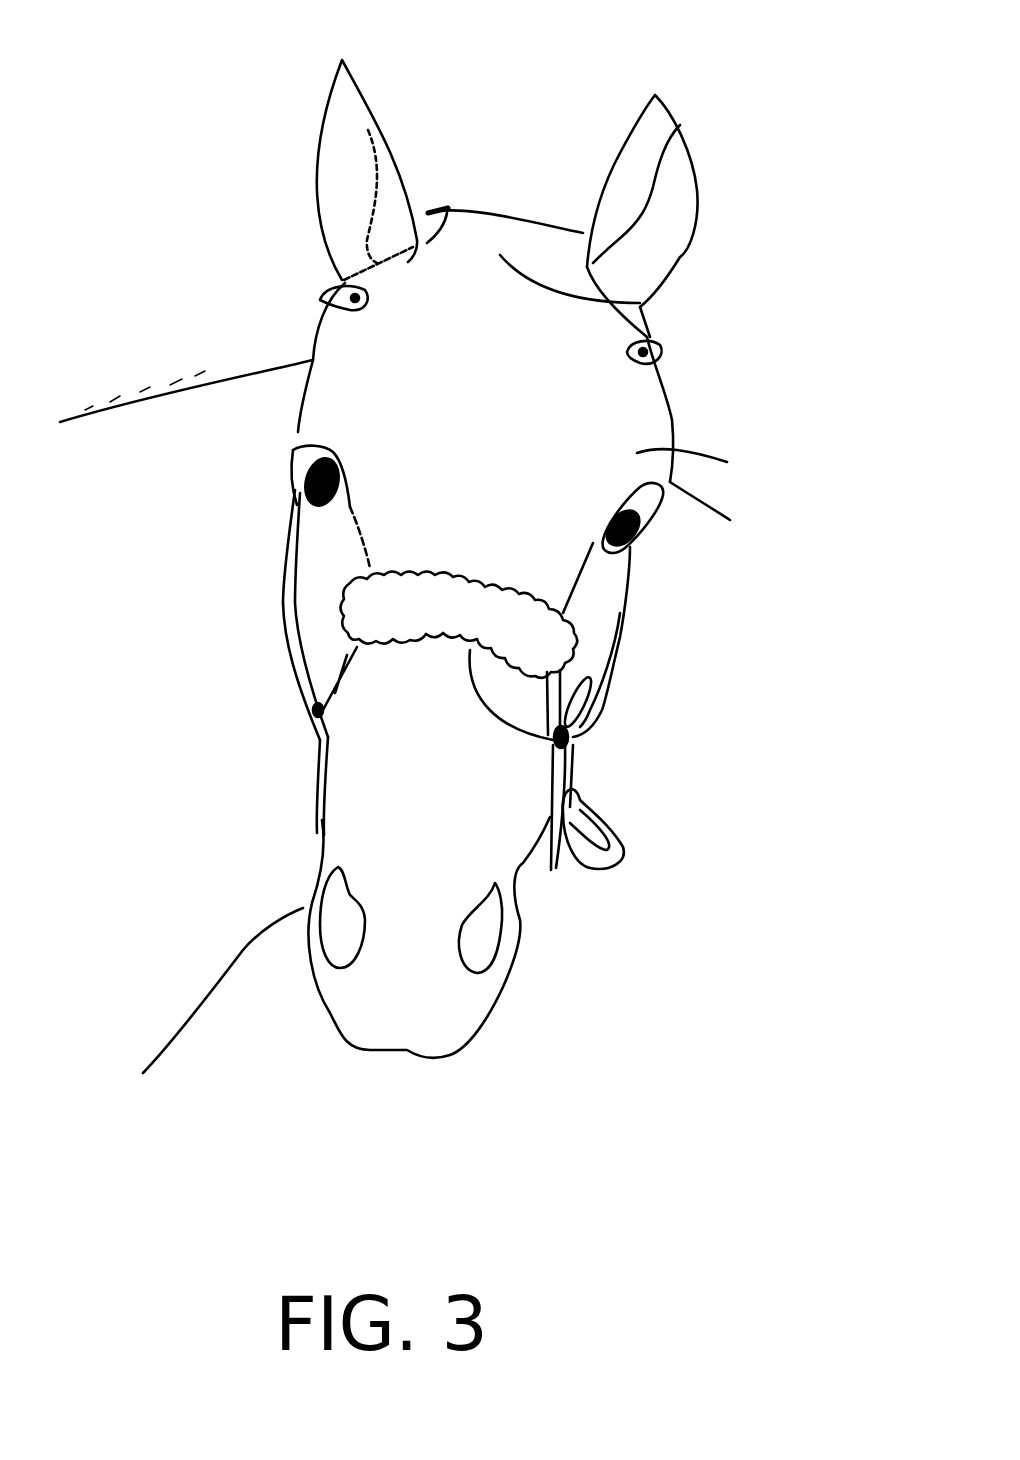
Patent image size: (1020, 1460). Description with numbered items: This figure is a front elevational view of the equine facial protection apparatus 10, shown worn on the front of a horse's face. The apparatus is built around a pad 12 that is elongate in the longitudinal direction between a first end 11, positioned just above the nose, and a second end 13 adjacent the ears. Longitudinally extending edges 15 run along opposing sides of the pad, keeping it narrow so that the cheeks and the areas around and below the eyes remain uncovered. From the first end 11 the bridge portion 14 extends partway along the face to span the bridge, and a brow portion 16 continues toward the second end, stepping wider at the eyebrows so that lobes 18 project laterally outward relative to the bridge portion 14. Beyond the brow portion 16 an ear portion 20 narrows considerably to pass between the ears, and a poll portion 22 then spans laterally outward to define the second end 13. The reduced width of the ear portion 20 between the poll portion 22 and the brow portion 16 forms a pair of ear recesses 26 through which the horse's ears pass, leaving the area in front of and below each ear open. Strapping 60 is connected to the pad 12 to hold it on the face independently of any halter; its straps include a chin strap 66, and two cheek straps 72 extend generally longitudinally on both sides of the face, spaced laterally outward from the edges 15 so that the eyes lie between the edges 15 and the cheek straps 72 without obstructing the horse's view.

The equine facial protection apparatus 10 is at (212, 252).
The first end 11 is at (570, 743).
The pad 12 is at (561, 423).
The second end 13 is at (521, 205).
The bridge portion 14 is at (497, 557).
The longitudinally extending edges 15 is at (350, 505).
The brow portion 16 is at (727, 462).
The lobes 18 is at (298, 428).
The ear portion 20 is at (640, 303).
The poll portion 22 is at (432, 210).
The ear recesses 26 is at (417, 243).
The strapping 60 is at (274, 740).
The chin strap 66 is at (336, 795).
The cheek straps 72 is at (287, 603).